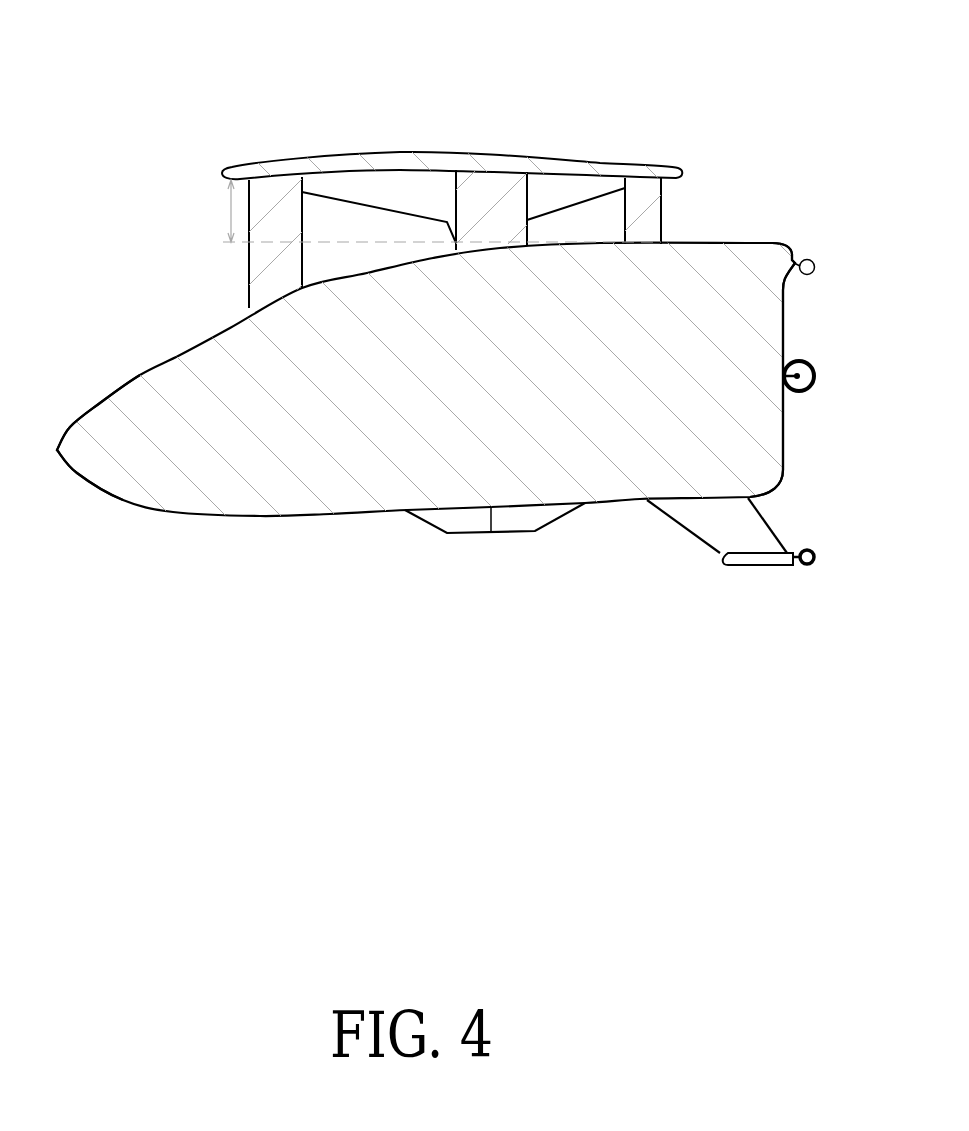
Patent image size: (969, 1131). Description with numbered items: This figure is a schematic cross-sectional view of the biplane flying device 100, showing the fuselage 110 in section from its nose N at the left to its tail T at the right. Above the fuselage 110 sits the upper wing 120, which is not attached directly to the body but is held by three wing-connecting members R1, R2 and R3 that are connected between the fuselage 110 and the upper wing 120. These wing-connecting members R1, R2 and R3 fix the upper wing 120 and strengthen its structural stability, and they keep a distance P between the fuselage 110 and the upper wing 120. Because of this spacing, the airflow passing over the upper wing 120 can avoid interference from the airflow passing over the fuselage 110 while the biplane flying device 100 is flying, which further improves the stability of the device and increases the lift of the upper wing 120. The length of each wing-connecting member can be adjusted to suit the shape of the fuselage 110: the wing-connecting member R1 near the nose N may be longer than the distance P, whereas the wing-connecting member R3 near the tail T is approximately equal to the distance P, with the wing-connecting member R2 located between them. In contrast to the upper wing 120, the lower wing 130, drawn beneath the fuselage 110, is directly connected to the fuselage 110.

The biplane flying device 100 is at (118, 57).
The fuselage 110 is at (265, 493).
The upper wing 120 is at (380, 153).
The lower wing 130 is at (470, 522).
The wing-connecting member R1 is at (258, 270).
The wing-connecting member R2 is at (492, 190).
The wing-connecting member R3 is at (648, 203).
The distance P is at (433, 211).
The nose N is at (97, 425).
The tail T is at (752, 445).